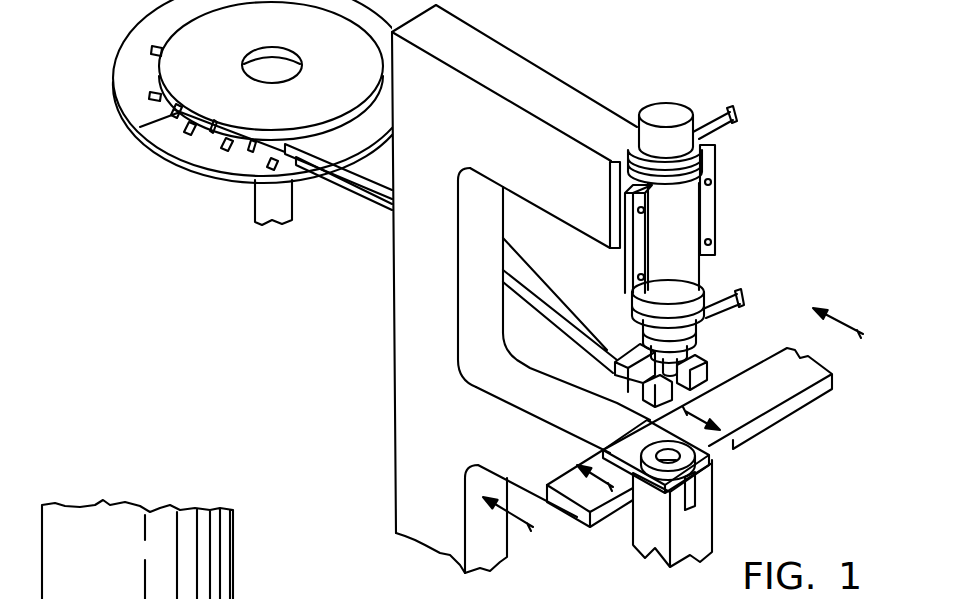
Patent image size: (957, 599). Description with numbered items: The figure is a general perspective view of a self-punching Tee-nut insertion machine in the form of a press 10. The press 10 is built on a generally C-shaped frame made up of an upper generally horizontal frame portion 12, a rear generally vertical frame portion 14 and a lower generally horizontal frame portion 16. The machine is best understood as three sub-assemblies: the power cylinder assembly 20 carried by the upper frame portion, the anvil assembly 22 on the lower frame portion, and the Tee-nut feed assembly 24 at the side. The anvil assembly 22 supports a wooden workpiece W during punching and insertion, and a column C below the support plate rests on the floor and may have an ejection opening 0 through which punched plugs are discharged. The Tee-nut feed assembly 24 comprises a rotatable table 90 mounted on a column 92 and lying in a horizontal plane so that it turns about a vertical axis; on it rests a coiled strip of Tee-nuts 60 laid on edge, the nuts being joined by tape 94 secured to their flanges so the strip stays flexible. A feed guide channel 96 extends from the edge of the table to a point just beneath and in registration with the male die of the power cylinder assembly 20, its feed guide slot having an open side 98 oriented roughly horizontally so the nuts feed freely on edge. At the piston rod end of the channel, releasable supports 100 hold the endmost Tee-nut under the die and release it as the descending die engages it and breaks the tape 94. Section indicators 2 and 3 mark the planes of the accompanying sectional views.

The press 10 is at (361, 330).
The upper generally horizontal frame portion 12 is at (560, 90).
The rear generally vertical frame portion 14 is at (420, 260).
The lower generally horizontal frame portion 16 is at (527, 450).
The power cylinder assembly 20 is at (747, 213).
The anvil assembly 22 is at (594, 425).
The Tee-nut feed assembly 24 is at (140, 185).
The Tee-nut 60 is at (227, 145).
The rotatable table 90 is at (130, 65).
The column 92 is at (263, 207).
The tape 94 is at (137, 128).
The feed guide channel 96 is at (370, 178).
The open side 98 is at (358, 190).
The releasable supports 100 is at (730, 348).
The wooden workpiece W is at (777, 373).
The column C is at (650, 530).
The ejection opening 0 is at (692, 487).
The section line 2- 2 is at (671, 414).
The section line 3- 3 is at (655, 450).